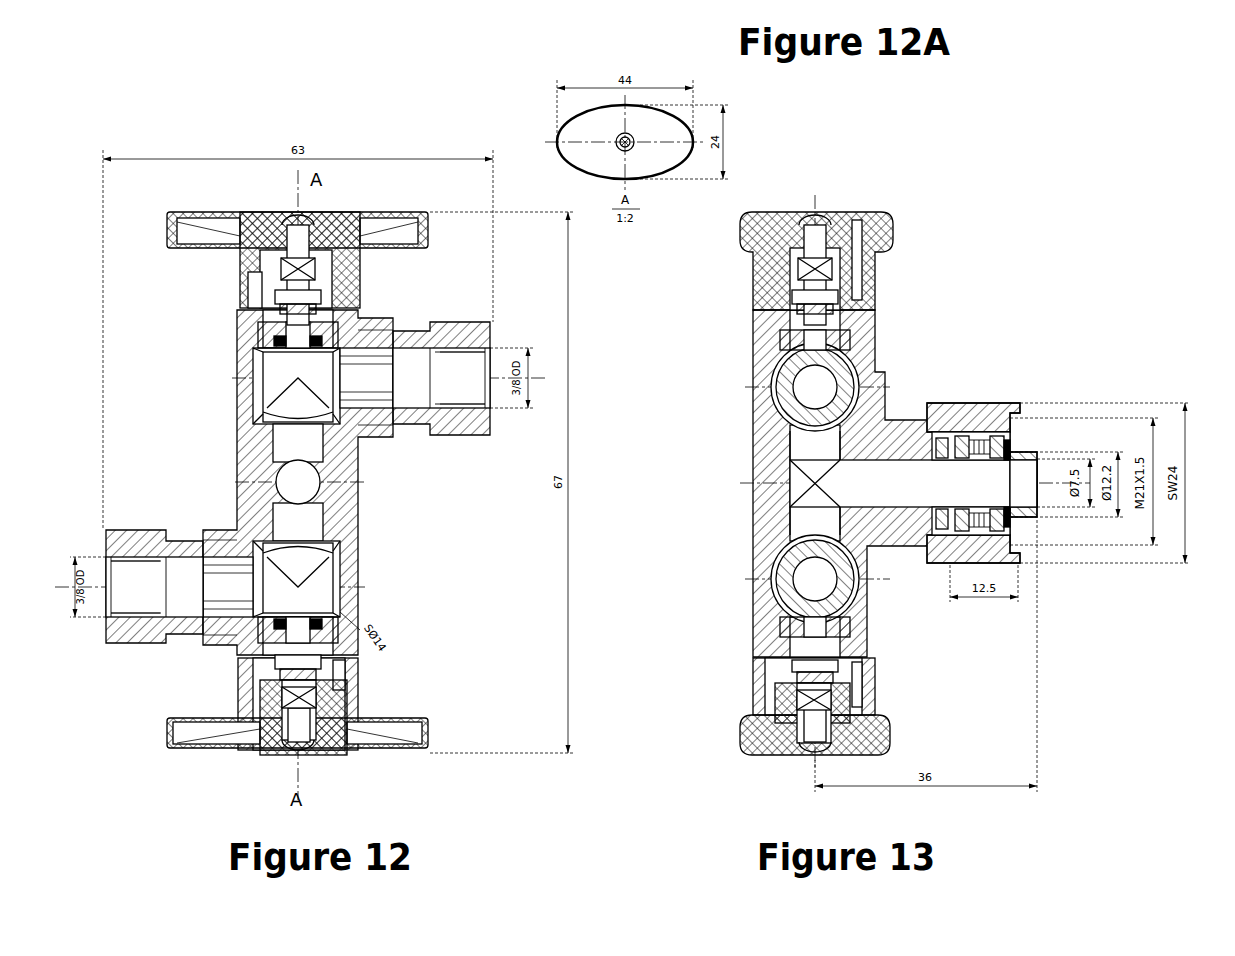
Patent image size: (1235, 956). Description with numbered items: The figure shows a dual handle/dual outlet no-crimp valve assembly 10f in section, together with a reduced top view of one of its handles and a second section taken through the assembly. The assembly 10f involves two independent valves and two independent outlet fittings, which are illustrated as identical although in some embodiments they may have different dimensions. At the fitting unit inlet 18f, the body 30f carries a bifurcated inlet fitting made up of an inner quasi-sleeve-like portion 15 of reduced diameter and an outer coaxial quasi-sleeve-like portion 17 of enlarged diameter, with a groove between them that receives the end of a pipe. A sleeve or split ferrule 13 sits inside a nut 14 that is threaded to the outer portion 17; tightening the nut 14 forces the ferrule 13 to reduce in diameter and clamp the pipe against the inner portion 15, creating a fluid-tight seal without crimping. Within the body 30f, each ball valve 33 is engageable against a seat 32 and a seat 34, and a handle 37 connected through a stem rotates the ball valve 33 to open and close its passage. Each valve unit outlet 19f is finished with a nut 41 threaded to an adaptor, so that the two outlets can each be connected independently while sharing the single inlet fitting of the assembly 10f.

In FIG. 12, the dual handle/dual outlet no-crimp valve assembly 10f is at (249, 148).
In FIG. 13, the dual handle/dual outlet no-crimp valve assembly 10f is at (953, 290).
In FIG. 13, the sleeve or split ferrule 13 is at (993, 424).
In FIG. 13, the nut 14 is at (1012, 550).
In FIG. 13, the inner quasi-sleeve-like portion 15 is at (1037, 452).
In FIG. 13, the outer quasi-sleeve-like portion 17 is at (943, 545).
In FIG. 13, the fitting unit inlet 18f is at (1044, 484).
In FIG. 12, the valve unit outlet 19f is at (462, 360).
In FIG. 12, the body 30f is at (250, 452).
In FIG. 13, the body 30f is at (862, 413).
In FIG. 12, the seat 32 is at (268, 350).
In FIG. 13, the seat 32 is at (780, 364).
In FIG. 12, the ball valve 33 is at (262, 350).
In FIG. 12, the seat 34 is at (335, 346).
In FIG. 12, the handle 37 is at (210, 213).
In FIG. 12A, the handle 37 is at (584, 128).
In FIG. 13, the handle 37 is at (855, 212).
In FIG. 12, the nut 41 is at (455, 440).